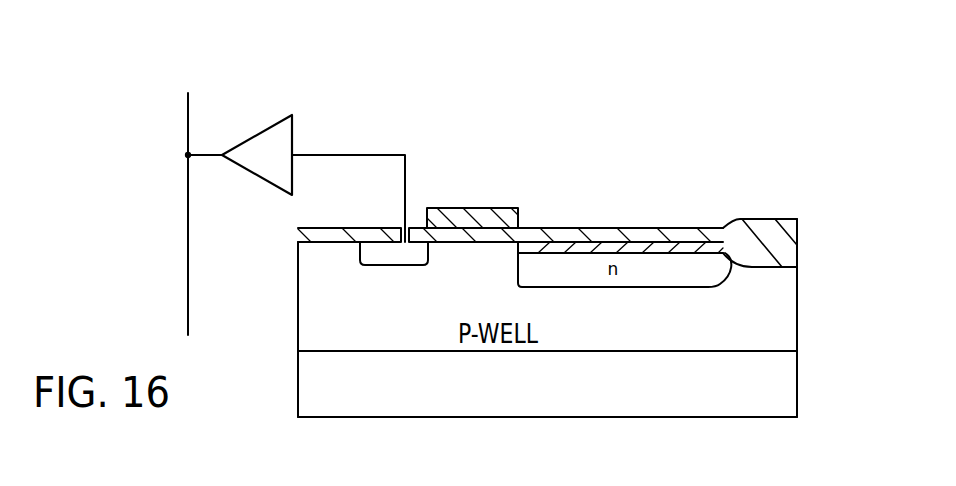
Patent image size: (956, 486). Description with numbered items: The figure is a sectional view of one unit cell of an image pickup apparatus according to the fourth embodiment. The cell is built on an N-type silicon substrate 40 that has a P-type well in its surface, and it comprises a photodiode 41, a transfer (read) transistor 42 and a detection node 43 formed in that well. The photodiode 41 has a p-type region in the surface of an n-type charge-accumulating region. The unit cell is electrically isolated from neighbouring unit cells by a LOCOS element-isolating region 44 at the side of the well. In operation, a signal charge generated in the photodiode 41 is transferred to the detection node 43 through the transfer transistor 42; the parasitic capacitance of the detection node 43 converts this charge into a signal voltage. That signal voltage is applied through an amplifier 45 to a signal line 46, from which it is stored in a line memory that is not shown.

The N-type silicon substrate 40 is at (685, 388).
The photodiode 41 is at (613, 211).
The transfer transistor 42 is at (480, 193).
The detection node 43 is at (392, 273).
The LOCOS element-isolating region 44 is at (774, 219).
The amplifier 45 is at (292, 127).
The signal line 46 is at (188, 295).